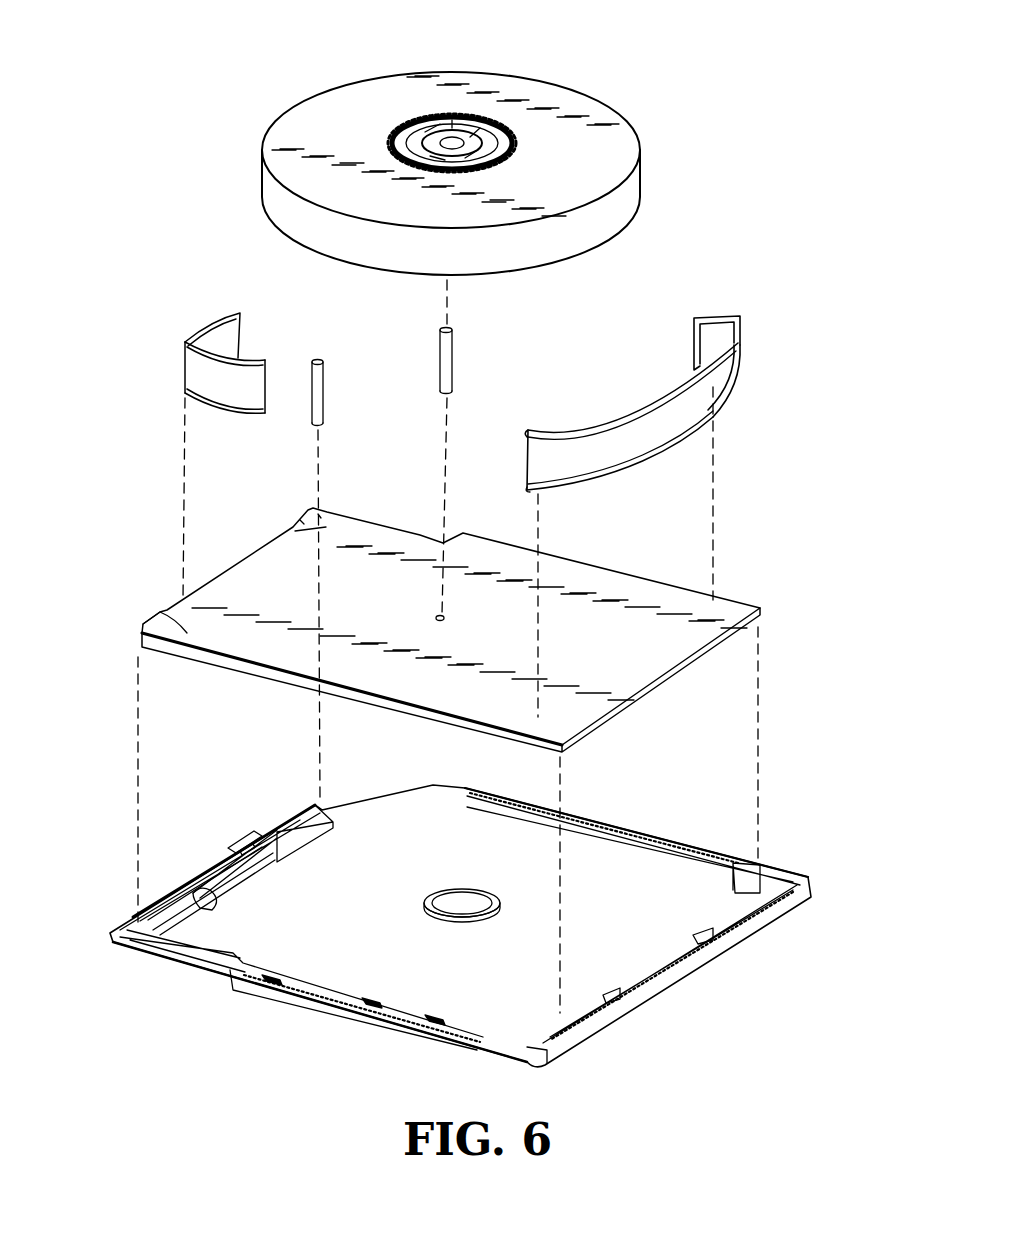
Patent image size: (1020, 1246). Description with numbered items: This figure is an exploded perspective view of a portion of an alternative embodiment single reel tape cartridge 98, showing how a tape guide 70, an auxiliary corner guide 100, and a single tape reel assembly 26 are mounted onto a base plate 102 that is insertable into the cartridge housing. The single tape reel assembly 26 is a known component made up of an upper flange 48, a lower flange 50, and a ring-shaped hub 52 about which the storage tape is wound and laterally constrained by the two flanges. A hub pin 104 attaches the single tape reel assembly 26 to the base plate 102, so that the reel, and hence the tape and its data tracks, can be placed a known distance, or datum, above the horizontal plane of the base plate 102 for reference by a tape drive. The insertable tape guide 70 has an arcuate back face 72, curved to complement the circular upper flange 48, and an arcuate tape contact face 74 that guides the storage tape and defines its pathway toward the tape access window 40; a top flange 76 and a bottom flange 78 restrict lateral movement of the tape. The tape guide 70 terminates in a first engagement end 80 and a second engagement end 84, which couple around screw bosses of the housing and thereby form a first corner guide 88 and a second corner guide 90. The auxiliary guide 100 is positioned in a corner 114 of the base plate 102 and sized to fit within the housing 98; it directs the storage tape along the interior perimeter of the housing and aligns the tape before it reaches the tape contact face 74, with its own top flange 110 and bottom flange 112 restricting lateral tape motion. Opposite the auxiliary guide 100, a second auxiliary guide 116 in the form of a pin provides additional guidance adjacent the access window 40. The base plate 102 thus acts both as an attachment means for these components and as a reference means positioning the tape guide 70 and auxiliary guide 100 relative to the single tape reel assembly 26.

The single tape reel assembly 26 is at (476, 150).
The upper flange 48 is at (618, 152).
The lower flange 50 is at (620, 207).
The ring-shaped hub 52 is at (450, 136).
The auxiliary guide 100 is at (178, 368).
The top flange 110 is at (185, 342).
The bottom flange 112 is at (213, 410).
The second auxiliary guide 116 is at (319, 388).
The hub pin 104 is at (448, 356).
The tape guide 70 is at (650, 396).
The back face 72 is at (653, 407).
The tape contact face 74 is at (709, 404).
The top flange 76 is at (623, 424).
The bottom flange 78 is at (597, 486).
The first engagement end 80 is at (529, 428).
The second engagement end 84 is at (725, 313).
The first corner guide 88 is at (533, 466).
The second corner guide 90 is at (738, 366).
The base plate 102 is at (415, 630).
The corner 114 is at (160, 608).
The single reel tape cartridge 98 is at (460, 907).
The tape access window 40 is at (380, 798).